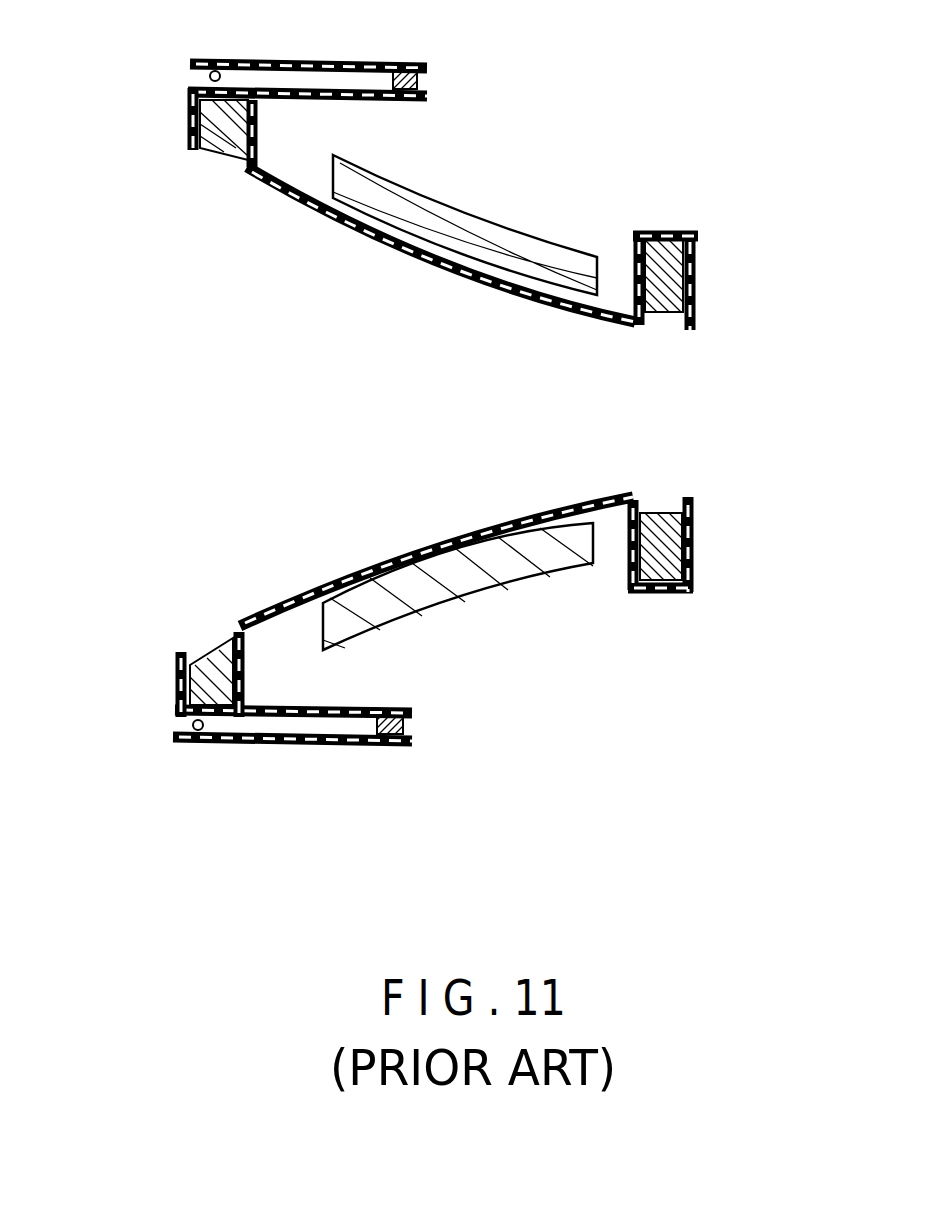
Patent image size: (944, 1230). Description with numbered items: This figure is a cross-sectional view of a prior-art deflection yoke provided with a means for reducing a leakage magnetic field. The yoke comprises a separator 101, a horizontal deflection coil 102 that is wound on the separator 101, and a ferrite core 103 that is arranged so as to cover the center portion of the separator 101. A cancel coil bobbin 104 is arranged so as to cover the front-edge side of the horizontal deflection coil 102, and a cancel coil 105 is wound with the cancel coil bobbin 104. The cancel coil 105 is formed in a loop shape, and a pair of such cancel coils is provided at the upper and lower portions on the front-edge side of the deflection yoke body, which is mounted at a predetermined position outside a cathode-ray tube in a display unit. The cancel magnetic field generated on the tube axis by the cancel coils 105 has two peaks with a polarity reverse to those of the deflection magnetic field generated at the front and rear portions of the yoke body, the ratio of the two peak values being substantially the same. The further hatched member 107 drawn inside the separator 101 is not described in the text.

The separator 101 is at (697, 277).
The horizontal deflection coil 102 is at (225, 142).
The ferrite core 103 is at (510, 228).
The cancel coil bobbin 104 is at (235, 58).
The cancel coil 105 is at (420, 80).
The elastic damping member 107 is at (658, 238).